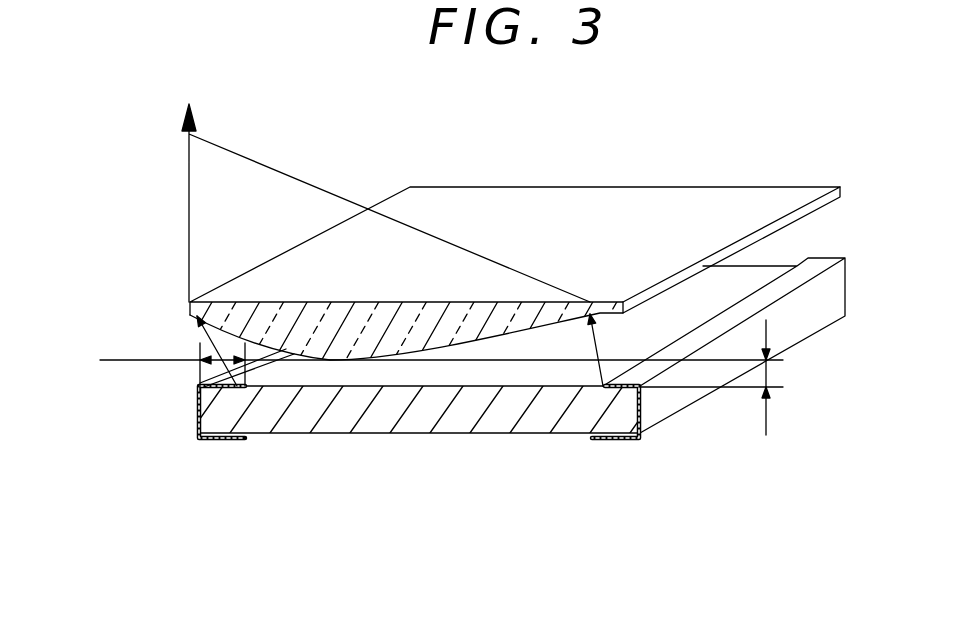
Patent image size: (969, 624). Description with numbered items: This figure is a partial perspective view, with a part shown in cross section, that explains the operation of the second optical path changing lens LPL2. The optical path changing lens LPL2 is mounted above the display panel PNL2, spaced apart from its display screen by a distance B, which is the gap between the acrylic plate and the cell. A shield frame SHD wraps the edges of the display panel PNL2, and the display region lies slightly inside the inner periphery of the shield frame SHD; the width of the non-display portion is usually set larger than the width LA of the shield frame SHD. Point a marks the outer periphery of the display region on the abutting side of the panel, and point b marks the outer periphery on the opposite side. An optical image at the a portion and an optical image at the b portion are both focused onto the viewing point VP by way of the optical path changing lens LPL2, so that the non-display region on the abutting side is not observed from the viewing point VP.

The viewing point VP is at (186, 132).
The second optical path changing lens LPL2 is at (614, 202).
The width of the shield frame LA is at (441, 361).
The point on outer periphery of display region on abutting side a is at (245, 353).
The point on outer periphery of display region on opposite side b is at (590, 353).
The gap between the acrylic plate and the cell B is at (767, 375).
The shield frame SHD is at (198, 438).
The display panel PNL2 is at (537, 437).